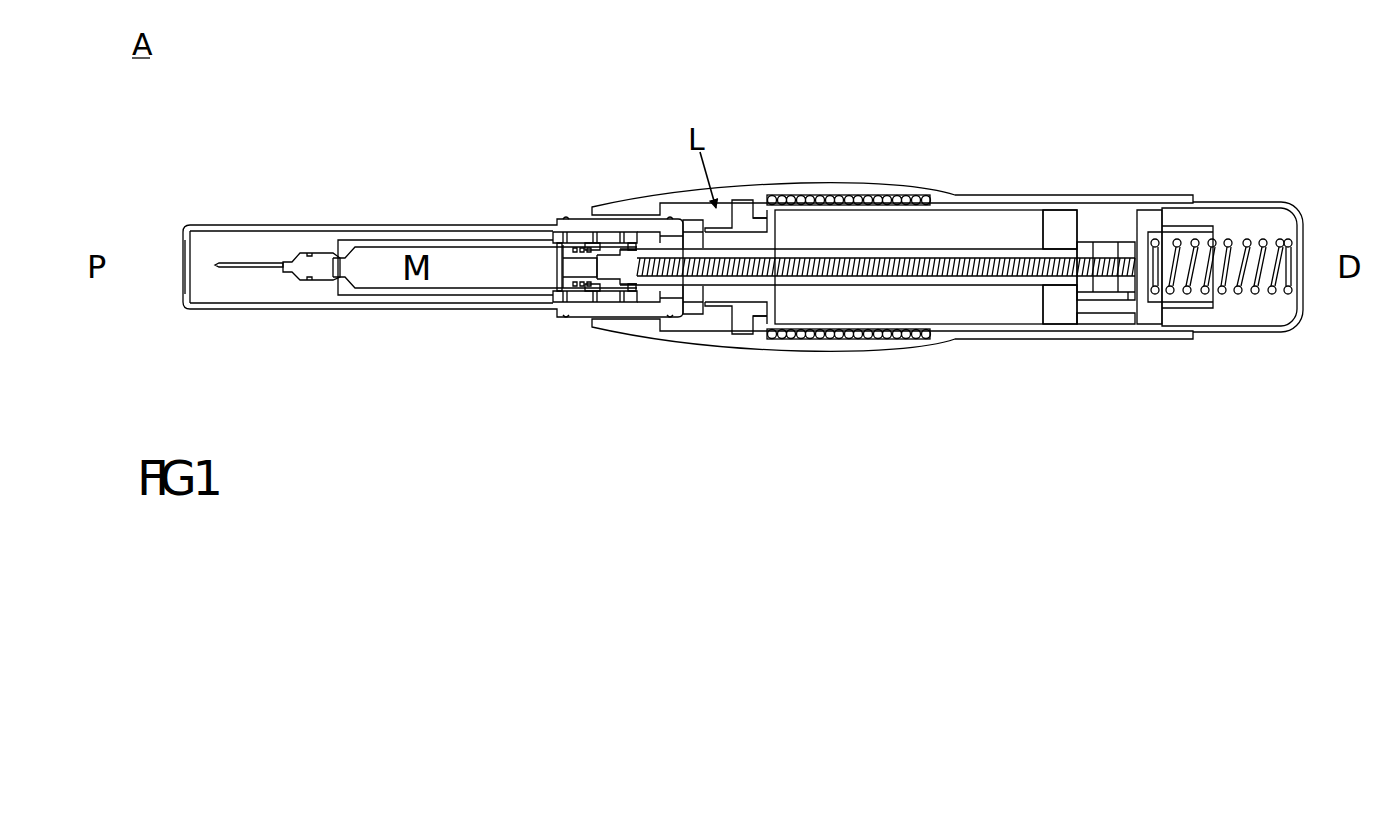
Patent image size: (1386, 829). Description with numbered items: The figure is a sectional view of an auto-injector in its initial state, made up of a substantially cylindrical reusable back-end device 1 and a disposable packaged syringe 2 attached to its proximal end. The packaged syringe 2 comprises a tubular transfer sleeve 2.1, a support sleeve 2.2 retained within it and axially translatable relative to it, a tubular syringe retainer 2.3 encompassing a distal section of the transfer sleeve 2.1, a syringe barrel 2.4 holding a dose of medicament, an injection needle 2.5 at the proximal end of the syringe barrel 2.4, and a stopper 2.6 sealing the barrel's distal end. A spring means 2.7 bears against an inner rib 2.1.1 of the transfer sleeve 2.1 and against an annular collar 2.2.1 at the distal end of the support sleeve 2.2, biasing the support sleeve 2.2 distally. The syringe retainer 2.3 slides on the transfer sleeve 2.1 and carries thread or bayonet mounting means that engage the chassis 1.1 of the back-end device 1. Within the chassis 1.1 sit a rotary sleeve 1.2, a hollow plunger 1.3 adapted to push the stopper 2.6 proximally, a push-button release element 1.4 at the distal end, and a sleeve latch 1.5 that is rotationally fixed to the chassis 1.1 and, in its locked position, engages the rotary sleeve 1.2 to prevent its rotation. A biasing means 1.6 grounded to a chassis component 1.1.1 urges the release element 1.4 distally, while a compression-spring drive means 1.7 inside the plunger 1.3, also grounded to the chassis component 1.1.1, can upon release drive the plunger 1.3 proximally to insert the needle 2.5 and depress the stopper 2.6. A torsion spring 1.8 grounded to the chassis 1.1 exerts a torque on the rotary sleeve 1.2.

The back-end device 1 is at (985, 176).
The chassis 1.1 is at (630, 205).
The chassis component 1.1.1 is at (1152, 215).
The rotary sleeve 1.2 is at (1062, 208).
The plunger 1.3 is at (820, 290).
The release element 1.4 is at (1198, 338).
The sleeve latch 1.5 is at (758, 325).
The biasing means 1.6 is at (1263, 292).
The drive means 1.7 is at (1092, 288).
The torsion spring 1.8 is at (808, 195).
The packaged syringe 2 is at (380, 218).
The transfer sleeve 2.1 is at (222, 312).
The inner rib 2.1.1 is at (553, 228).
The support sleeve 2.2 is at (360, 296).
The annular collar 2.2.1 is at (634, 304).
The syringe retainer 2.3 is at (563, 304).
The syringe barrel 2.4 is at (418, 292).
The injection needle 2.5 is at (220, 262).
The stopper 2.6 is at (558, 268).
The spring means 2.7 is at (590, 304).